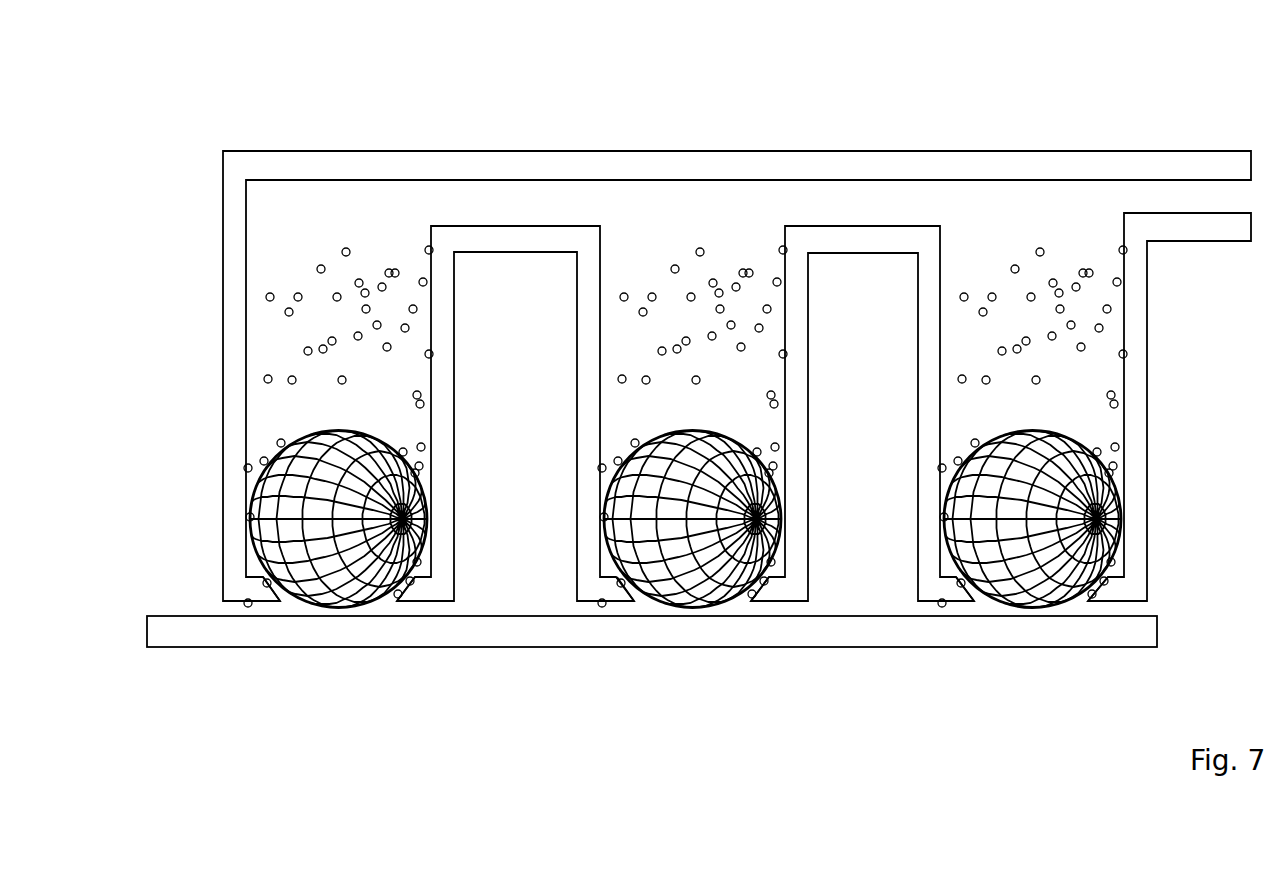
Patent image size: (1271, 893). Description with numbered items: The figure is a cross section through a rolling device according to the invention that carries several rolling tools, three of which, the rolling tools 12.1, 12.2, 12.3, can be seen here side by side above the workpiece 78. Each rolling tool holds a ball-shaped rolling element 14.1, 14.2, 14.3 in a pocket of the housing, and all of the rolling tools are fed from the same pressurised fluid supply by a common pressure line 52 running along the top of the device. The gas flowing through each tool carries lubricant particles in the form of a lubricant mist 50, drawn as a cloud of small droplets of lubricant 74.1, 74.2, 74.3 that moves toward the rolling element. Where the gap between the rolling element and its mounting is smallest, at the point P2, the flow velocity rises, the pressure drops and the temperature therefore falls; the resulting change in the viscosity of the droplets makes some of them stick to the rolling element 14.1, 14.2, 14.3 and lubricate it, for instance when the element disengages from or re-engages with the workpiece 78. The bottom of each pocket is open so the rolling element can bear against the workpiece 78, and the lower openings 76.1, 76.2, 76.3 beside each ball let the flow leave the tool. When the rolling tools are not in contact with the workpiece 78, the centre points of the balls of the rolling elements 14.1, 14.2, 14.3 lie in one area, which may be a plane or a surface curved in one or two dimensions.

The rolling tool 12.1 is at (327, 110).
The rolling tool 12.2 is at (690, 110).
The rolling tool 12.3 is at (1015, 110).
The rolling element 14.1 is at (403, 498).
The rolling element 14.2 is at (757, 498).
The rolling element 14.3 is at (1097, 498).
The lubricant mist 50 is at (407, 371).
The pressure line 52 is at (1221, 193).
The droplet of lubricant 74.1 is at (266, 295).
The droplet of lubricant 74.2 is at (285, 312).
The droplet of lubricant 74.3 is at (265, 377).
The first opening 76.1 is at (268, 585).
The second opening 76.2 is at (622, 585).
The third opening 76.3 is at (962, 585).
The workpiece 78 is at (652, 632).
The point of smallest distance P2 is at (430, 528).